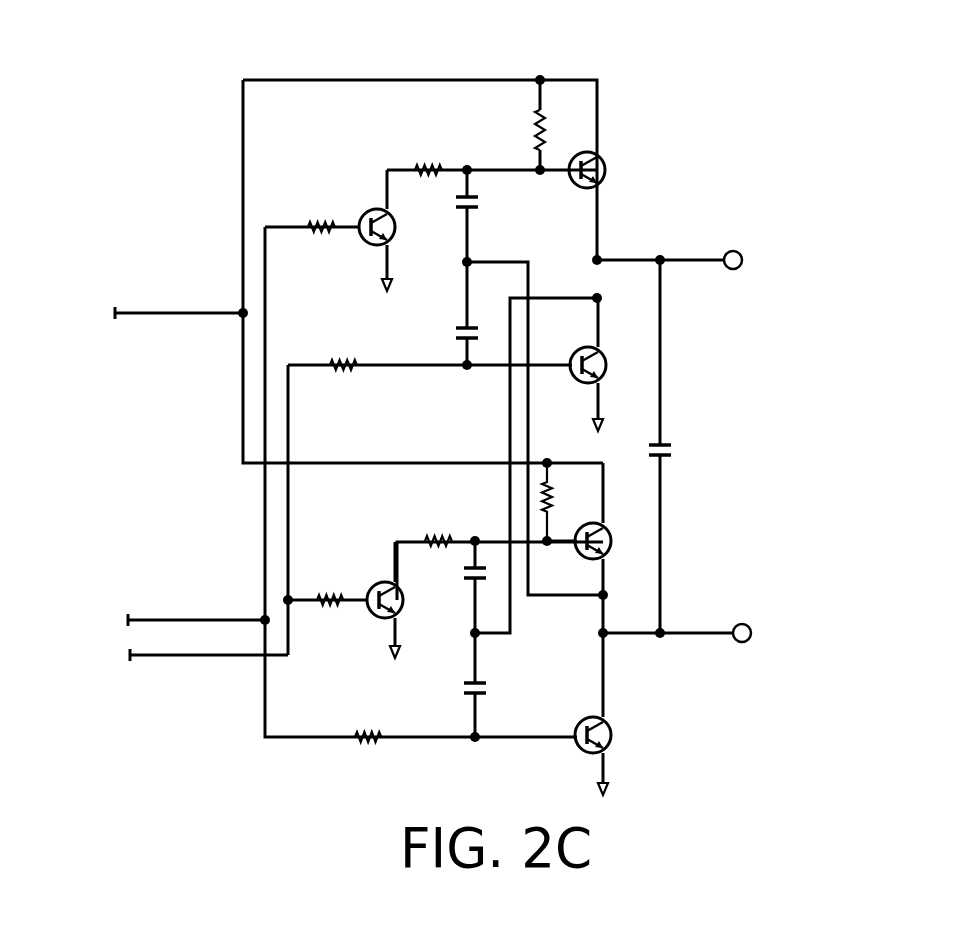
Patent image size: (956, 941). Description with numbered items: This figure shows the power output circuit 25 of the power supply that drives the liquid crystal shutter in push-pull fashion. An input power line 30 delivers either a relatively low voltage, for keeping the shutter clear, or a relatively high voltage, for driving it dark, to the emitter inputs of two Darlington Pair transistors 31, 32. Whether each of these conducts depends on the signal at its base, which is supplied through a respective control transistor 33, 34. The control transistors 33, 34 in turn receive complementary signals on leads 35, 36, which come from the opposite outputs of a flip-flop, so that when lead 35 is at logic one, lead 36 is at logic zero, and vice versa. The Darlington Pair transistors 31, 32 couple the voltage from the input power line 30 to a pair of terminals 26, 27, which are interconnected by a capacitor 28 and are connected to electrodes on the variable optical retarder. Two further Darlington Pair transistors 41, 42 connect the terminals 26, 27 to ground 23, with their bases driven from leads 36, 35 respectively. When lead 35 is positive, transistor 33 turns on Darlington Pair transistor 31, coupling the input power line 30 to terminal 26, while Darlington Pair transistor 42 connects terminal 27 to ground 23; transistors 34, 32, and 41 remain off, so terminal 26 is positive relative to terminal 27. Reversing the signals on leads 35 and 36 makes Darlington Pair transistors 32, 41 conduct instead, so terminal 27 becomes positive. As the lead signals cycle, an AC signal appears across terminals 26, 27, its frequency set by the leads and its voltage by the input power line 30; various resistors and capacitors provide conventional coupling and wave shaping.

The ground 23 is at (620, 794).
The power output circuit 25 is at (668, 204).
The terminal 26 is at (738, 252).
The terminal 27 is at (743, 623).
The capacitor 28 is at (670, 447).
The input power line 30 is at (195, 312).
The Darlington Pair transistor 31 is at (606, 168).
The Darlington Pair transistor 32 is at (613, 538).
The control transistor 33 is at (367, 211).
The control transistor 34 is at (373, 583).
The lead 35 is at (200, 618).
The lead 36 is at (255, 656).
The Darlington Pair transistor 41 is at (607, 363).
The Darlington Pair transistor 42 is at (617, 731).